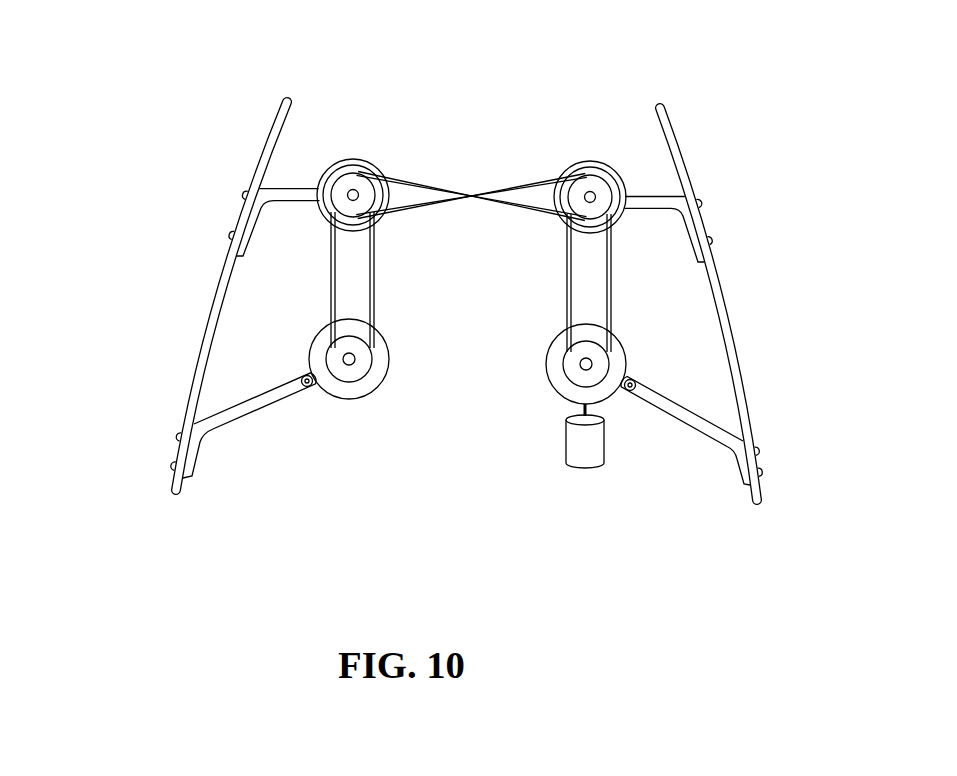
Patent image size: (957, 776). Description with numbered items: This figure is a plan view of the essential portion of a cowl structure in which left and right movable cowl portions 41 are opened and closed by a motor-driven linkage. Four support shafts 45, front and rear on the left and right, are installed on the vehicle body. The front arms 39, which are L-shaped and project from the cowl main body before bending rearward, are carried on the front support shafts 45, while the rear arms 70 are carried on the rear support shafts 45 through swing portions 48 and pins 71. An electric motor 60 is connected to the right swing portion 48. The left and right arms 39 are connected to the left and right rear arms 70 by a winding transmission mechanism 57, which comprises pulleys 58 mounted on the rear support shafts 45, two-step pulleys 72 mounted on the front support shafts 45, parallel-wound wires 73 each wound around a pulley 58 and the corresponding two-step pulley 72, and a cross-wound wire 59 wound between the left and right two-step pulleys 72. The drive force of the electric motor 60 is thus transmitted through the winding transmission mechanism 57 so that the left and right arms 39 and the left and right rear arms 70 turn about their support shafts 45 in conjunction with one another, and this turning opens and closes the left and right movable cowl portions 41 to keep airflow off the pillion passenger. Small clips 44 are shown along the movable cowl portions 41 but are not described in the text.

The arm 39 is at (287, 201).
The movable cowl portion 41 is at (203, 333).
The clip 44 is at (243, 194).
The support shaft 45 is at (350, 192).
The swing portion 48 is at (317, 343).
The winding transmission mechanism 57 is at (468, 192).
The pulley 58 is at (355, 374).
The cross-wound wire 59 is at (447, 207).
The electric motor 60 is at (585, 458).
The rear arm 70 is at (235, 418).
The pin 71 is at (311, 391).
The two-step pulley 72 is at (351, 180).
The parallel-wound wire 73 is at (378, 292).